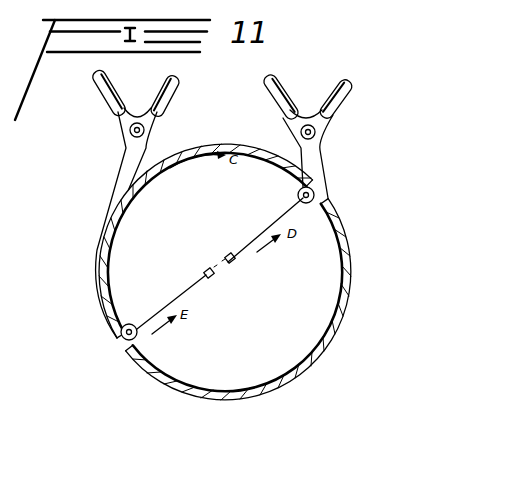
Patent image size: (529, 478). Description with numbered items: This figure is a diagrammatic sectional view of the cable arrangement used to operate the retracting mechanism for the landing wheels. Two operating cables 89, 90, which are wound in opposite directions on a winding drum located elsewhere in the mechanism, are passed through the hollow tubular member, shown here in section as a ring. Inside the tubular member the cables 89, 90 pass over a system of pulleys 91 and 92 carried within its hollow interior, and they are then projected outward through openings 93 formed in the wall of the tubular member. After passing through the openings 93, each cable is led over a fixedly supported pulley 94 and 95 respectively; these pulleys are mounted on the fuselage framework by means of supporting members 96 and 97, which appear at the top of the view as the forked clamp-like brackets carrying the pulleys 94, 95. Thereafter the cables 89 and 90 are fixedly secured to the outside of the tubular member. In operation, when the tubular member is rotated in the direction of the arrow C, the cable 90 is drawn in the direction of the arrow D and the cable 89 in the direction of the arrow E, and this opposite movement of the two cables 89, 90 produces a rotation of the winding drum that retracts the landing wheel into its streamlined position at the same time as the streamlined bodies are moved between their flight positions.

The operating cable 89 is at (198, 283).
The operating cable 90 is at (250, 240).
The pulley 91 is at (232, 262).
The pulley 92 is at (307, 204).
The opening 93 is at (318, 198).
The fixedly supported pulley 94 is at (130, 131).
The fixedly supported pulley 95 is at (316, 133).
The supporting member 96 is at (174, 102).
The supporting member 97 is at (268, 93).